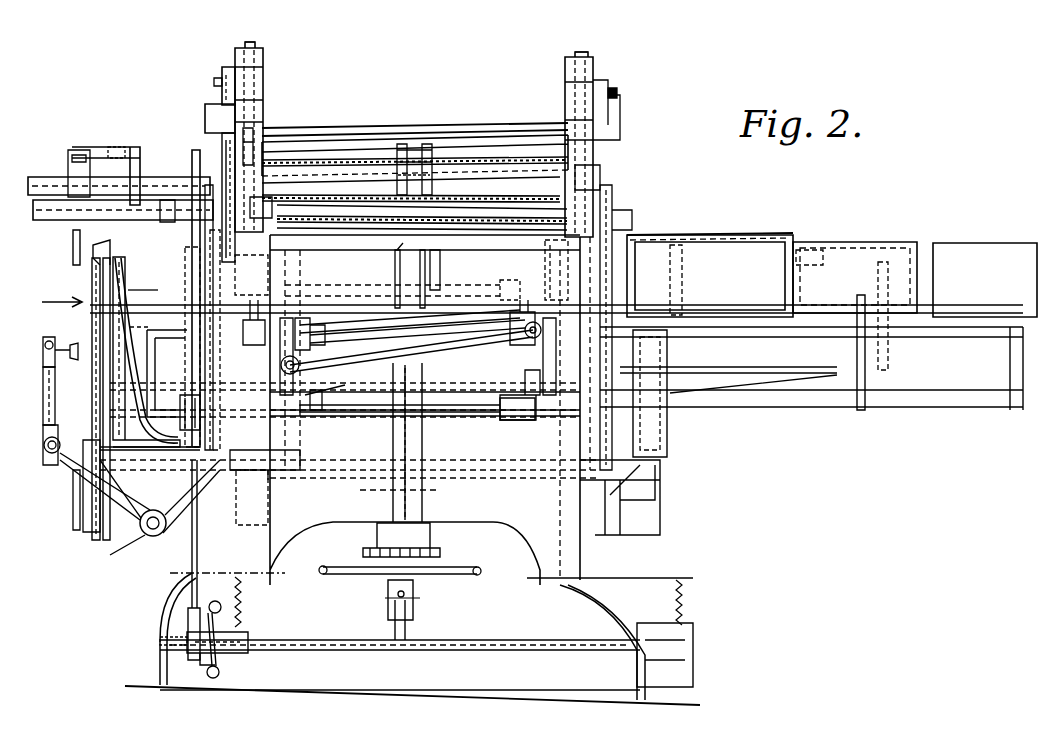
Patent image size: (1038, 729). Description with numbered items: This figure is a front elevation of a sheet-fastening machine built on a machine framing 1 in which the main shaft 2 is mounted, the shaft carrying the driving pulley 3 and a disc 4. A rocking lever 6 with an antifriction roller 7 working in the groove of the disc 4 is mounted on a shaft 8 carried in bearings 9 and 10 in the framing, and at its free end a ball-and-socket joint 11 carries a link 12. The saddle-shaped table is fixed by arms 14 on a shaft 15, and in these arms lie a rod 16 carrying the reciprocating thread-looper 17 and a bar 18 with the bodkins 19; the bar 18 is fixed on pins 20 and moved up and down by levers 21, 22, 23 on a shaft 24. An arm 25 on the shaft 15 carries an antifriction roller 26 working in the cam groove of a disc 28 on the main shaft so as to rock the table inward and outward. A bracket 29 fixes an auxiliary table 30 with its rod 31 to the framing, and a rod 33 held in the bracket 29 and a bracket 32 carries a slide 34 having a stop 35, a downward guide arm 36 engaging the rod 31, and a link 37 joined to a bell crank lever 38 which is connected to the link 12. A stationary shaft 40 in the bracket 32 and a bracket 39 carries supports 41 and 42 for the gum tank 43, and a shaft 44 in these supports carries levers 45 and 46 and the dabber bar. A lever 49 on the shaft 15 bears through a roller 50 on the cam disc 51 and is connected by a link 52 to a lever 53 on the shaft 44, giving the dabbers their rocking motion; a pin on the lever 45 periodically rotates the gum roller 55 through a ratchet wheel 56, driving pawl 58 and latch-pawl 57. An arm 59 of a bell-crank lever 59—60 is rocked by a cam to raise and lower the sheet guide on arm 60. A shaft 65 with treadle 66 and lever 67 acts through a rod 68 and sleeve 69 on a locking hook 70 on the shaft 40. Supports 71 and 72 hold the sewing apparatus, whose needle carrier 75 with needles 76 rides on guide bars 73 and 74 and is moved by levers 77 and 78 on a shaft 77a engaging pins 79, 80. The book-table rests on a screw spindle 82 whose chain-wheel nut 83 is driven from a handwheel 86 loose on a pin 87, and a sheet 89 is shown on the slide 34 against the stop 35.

The machine framing 1 is at (590, 620).
The main shaft 2 is at (380, 440).
The driving pulley 3 is at (632, 337).
The disc 4 is at (100, 525).
The rocking lever 6 is at (75, 380).
The antifriction roller 7 is at (85, 468).
The shaft 8 is at (73, 472).
The bearing 9 is at (160, 510).
The bearing 10 is at (268, 493).
The ball-and-socket joint 11 is at (49, 341).
The link 12 is at (50, 425).
The arms 14 is at (280, 350).
The shaft 15 is at (490, 412).
The rod 16 is at (490, 290).
The reciprocating thread-looper 17 is at (440, 258).
The bar 18 is at (505, 295).
The bodkins 19 is at (414, 243).
The pins 20 is at (312, 400).
The lever 21 is at (505, 320).
The lever 22 is at (332, 330).
The lever 23 is at (256, 283).
The shaft 24 is at (430, 320).
The arm 25 is at (180, 425).
The antifriction roller 26 is at (148, 532).
The disc 28 is at (192, 548).
The bracket 29 is at (598, 445).
The auxiliary table 30 is at (946, 225).
The rod 31 is at (365, 342).
The bracket 32 is at (85, 250).
The rod 33 is at (175, 300).
The slide 34 is at (820, 242).
The stop 35 is at (810, 260).
The guide arm 36 is at (855, 410).
The link 37 is at (360, 360).
The bell crank lever 38 is at (250, 462).
The bracket 39 is at (625, 215).
The stationary shaft 40 is at (36, 212).
The support 41 is at (246, 235).
The support 42 is at (574, 240).
The gum tank 43 is at (470, 178).
The shaft 44 is at (176, 168).
The lever 45 is at (222, 160).
The lever 46 is at (600, 178).
The lever 49 is at (145, 288).
The antifriction roller 50 is at (150, 320).
The cam disc 51 is at (130, 275).
The link 52 is at (80, 147).
The lever 53 is at (68, 170).
The roller 55 is at (362, 135).
The ratchet wheel 56 is at (252, 130).
The latch-pawl 57 is at (272, 210).
The driving pawl 58 is at (220, 133).
The arm 59 is at (620, 272).
The arm 60 is at (612, 205).
The shaft 65 is at (488, 652).
The operating treadle 66 is at (693, 683).
The lever 67 is at (218, 660).
The rod 68 is at (192, 580).
The sleeve 69 is at (205, 232).
The locking hook 70 is at (192, 160).
The support 71 is at (263, 58).
The support 72 is at (593, 66).
The guide bar 73 is at (250, 42).
The guide bar 74 is at (580, 52).
The needle carrier 75 is at (415, 145).
The needles 76 is at (395, 177).
The lever 77 is at (222, 95).
The shaft 77a is at (330, 127).
The lever 78 is at (612, 110).
The pin 79 is at (216, 80).
The pin 80 is at (617, 92).
The screw spindle 82 is at (413, 612).
The chain wheel 83 is at (440, 552).
The handwheel 86 is at (345, 580).
The pin 87 is at (385, 600).
The sheet 89 is at (735, 235).